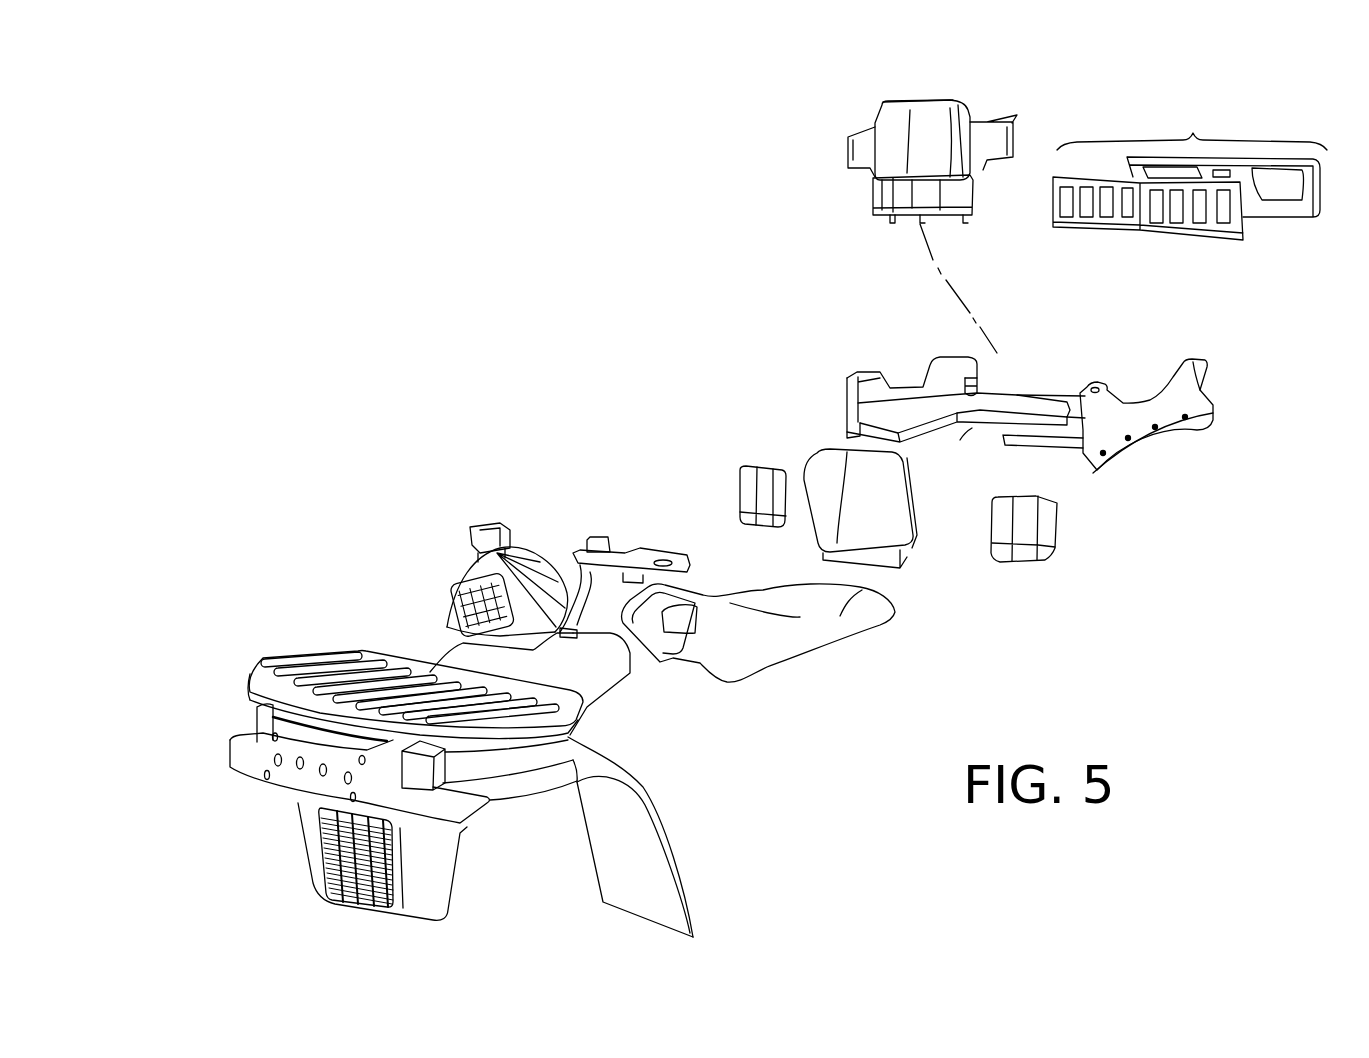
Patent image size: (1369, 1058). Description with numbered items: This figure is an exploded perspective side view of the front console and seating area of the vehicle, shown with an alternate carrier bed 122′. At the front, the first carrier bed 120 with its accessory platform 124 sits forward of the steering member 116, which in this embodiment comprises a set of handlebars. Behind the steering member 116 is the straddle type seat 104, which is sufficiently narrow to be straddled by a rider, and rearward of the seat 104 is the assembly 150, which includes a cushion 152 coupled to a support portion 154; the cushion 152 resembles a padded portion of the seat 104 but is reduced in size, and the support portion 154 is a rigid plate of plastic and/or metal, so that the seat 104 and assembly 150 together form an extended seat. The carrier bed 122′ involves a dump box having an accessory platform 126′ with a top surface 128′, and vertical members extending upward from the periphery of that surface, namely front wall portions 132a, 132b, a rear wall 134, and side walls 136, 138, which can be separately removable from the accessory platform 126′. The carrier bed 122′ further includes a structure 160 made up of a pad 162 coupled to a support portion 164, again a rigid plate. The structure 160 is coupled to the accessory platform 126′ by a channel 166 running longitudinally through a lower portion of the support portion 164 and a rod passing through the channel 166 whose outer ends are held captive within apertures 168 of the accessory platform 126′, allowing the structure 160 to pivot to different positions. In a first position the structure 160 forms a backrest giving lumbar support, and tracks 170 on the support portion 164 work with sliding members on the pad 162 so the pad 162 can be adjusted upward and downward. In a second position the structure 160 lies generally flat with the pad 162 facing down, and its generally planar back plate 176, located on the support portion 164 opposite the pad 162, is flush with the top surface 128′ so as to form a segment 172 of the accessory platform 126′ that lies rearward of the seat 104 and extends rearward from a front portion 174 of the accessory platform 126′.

The straddle type seat 104 is at (793, 637).
The steering member 116 is at (634, 552).
The first carrier bed 120 is at (281, 641).
The carrier bed 122′ is at (1044, 356).
The accessory platform 124 is at (345, 650).
The accessory platform 126′ is at (1062, 412).
The top surface 128′ is at (992, 400).
The front wall portion 132a is at (1047, 530).
The front wall portion 132b is at (737, 478).
The rear wall 134 is at (1193, 133).
The side wall 136 is at (1195, 394).
The side wall 138 is at (875, 385).
The assembly 150 is at (900, 576).
The cushion 152 is at (830, 460).
The support portion 154 is at (917, 523).
The structure 160 is at (953, 94).
The pad 162 is at (894, 117).
The support portion 164 is at (963, 198).
The channel 166 is at (893, 215).
The apertures 168 is at (958, 410).
The tracks 170 is at (888, 197).
The segment 172 is at (970, 428).
The front portion 174 is at (1050, 440).
The back plate 176 is at (1005, 148).